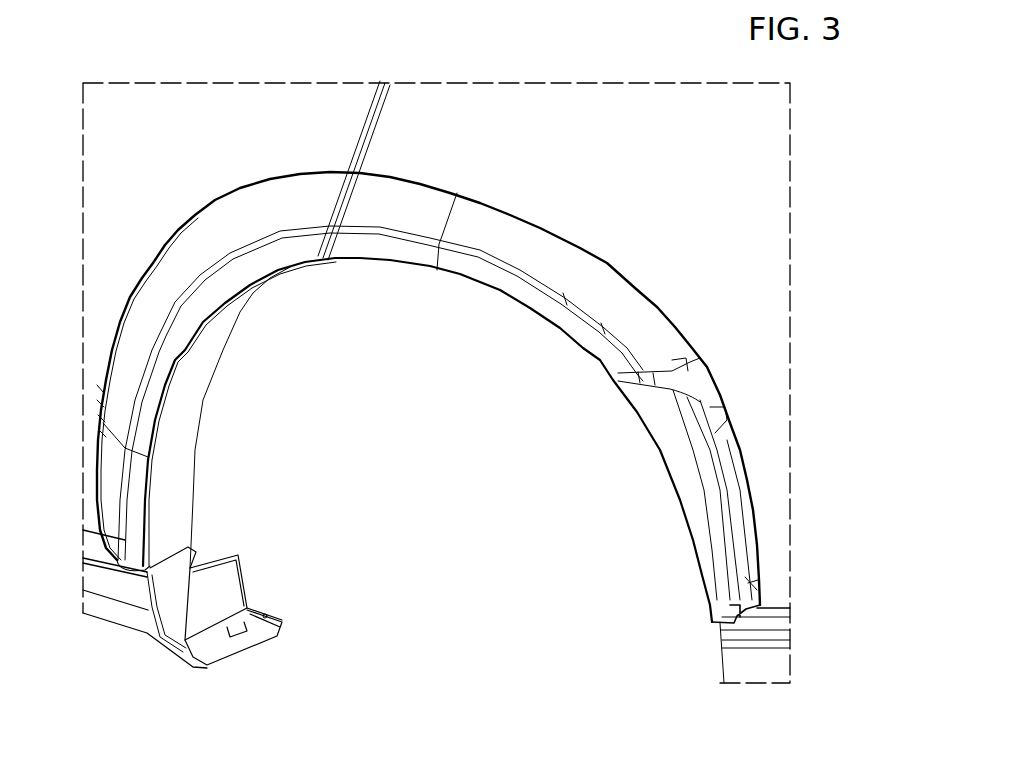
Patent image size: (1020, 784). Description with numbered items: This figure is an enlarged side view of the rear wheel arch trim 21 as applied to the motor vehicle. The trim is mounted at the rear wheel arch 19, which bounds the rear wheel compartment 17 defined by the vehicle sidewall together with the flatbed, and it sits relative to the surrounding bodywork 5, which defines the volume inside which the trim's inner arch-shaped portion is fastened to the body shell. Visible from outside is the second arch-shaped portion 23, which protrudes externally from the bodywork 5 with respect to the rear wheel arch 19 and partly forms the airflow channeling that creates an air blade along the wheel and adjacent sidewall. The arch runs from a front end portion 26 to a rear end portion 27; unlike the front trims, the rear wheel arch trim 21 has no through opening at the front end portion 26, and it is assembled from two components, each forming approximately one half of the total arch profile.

The bodywork 5 is at (250, 108).
The rear wheel compartment 17 is at (262, 430).
The rear wheel arch 19 is at (168, 218).
The rear wheel arch trim 21 is at (524, 240).
The second arch-shaped portion 23 is at (289, 238).
The front end portion 26 is at (150, 523).
The rear end portion 27 is at (677, 452).